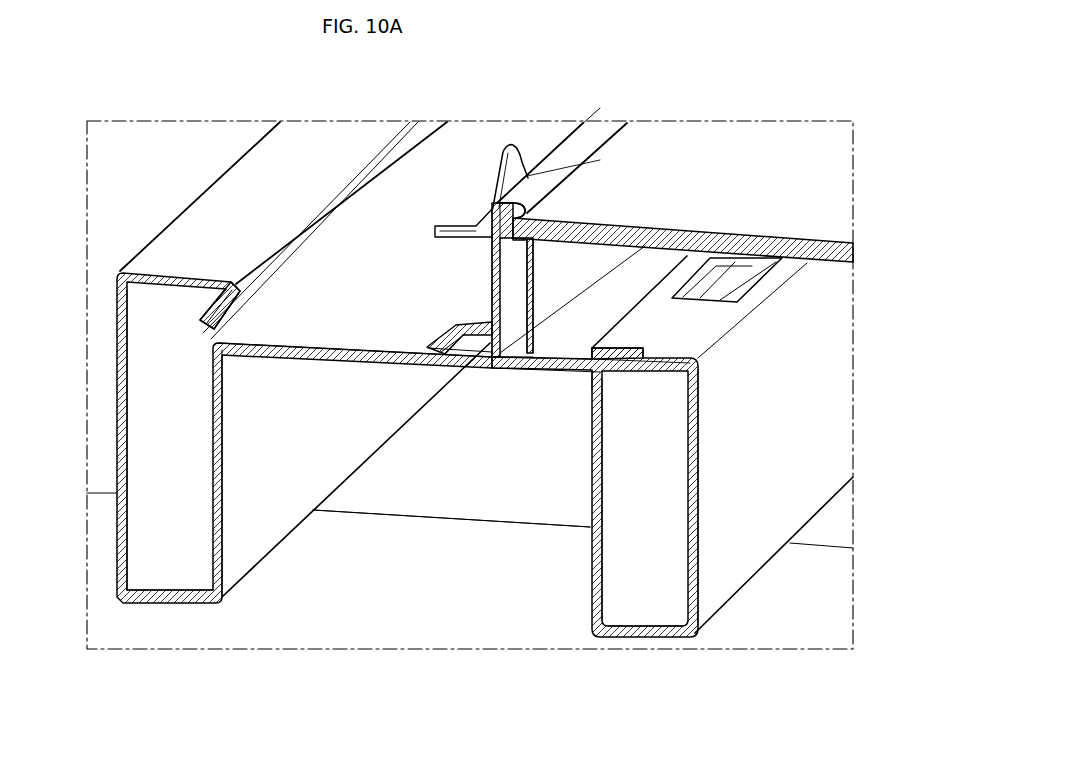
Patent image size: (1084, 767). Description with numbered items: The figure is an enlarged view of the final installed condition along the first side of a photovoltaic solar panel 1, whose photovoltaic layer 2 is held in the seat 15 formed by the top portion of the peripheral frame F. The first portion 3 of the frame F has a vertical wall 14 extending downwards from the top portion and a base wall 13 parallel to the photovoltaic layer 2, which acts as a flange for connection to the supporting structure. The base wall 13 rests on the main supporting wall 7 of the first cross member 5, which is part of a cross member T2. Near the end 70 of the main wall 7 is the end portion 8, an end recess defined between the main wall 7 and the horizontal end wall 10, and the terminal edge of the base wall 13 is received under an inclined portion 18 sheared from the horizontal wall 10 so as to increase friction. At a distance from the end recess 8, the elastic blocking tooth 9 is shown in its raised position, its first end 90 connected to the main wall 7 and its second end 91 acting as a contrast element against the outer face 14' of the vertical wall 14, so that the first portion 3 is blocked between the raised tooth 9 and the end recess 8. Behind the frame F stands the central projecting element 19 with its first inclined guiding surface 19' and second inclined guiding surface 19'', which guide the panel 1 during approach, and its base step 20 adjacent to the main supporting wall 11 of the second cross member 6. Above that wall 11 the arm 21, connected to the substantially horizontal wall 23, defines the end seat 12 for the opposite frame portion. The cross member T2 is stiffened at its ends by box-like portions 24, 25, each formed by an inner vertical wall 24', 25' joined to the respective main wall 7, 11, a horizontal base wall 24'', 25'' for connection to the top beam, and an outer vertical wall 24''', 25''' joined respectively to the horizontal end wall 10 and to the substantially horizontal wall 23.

The photovoltaic solar panel 1 is at (880, 130).
The photovoltaic layer 2 is at (769, 228).
The first portion of the frame 3 is at (490, 291).
The first cross member 5 is at (568, 378).
The second cross member 6 is at (231, 361).
The main supporting wall 7 is at (530, 372).
The end portion (end recess) 8 is at (660, 372).
The elastic blocking tooth 9 is at (458, 328).
The horizontal end wall 10 is at (703, 325).
The main supporting wall 11 is at (283, 350).
The end seat 12 is at (213, 335).
The base wall 13 is at (505, 347).
The vertical wall 14 is at (545, 296).
The outer face of the vertical wall 14' is at (443, 282).
The seat 15 is at (565, 136).
The inclined portion 18 is at (740, 292).
The central projecting element 19 is at (493, 149).
The first inclined guiding surface 19' is at (575, 163).
The second inclined guiding surface 19'' is at (489, 170).
The base step 20 is at (460, 228).
The arm 21 is at (222, 302).
The substantially horizontal wall 23 is at (228, 208).
The box-like portion 24 is at (672, 492).
The inner vertical wall 24' is at (726, 497).
The horizontal base wall 24'' is at (645, 587).
The outer vertical wall 24''' is at (630, 500).
The box-like portion 25 is at (267, 438).
The inner vertical wall 25' is at (406, 470).
The horizontal base wall 25'' is at (170, 542).
The outer vertical wall 25''' is at (155, 440).
The end of the main wall 70 is at (590, 372).
The first end of the tooth 90 is at (433, 341).
The second end of the tooth 91 is at (447, 340).
The peripheral frame F is at (587, 134).
The cross member T2 is at (444, 545).